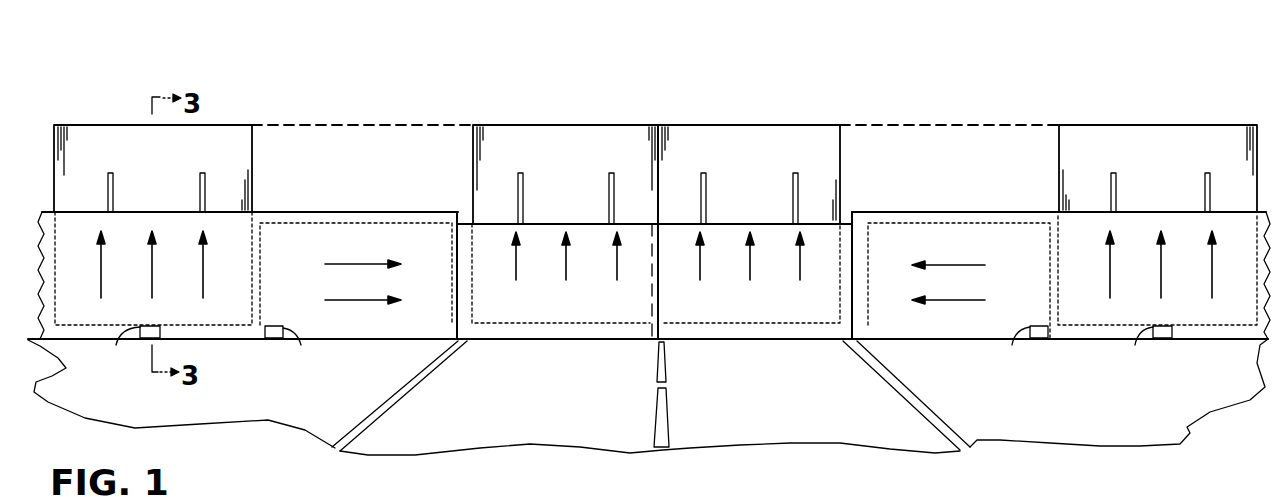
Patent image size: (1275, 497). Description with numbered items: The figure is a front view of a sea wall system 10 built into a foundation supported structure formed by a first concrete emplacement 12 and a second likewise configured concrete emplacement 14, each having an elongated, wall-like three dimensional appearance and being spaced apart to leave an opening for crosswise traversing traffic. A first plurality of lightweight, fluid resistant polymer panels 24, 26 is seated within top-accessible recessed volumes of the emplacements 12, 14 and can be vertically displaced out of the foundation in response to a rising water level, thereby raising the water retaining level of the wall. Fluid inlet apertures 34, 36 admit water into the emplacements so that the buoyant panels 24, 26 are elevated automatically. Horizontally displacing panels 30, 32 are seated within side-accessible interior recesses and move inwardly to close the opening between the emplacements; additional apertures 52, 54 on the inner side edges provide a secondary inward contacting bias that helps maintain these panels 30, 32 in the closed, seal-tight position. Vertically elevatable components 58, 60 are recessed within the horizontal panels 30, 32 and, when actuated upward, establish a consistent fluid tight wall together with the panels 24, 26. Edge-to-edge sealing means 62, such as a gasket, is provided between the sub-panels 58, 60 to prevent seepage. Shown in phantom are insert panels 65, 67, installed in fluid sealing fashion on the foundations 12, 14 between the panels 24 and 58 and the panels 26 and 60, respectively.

The sea wall system 10 is at (460, 88).
The first concrete emplacement 12 is at (78, 244).
The second concrete emplacement 14 is at (1040, 230).
The vertically displaceable panel 24 is at (117, 148).
The vertically displaceable panel 26 is at (1147, 145).
The horizontally displacing panel 30 is at (612, 340).
The horizontally displacing panel 32 is at (718, 305).
The fluid inlet aperture 34 is at (116, 345).
The fluid inlet aperture 36 is at (1135, 345).
The aperture 52 is at (301, 345).
The aperture 54 is at (1012, 345).
The vertically elevatable component 58 is at (563, 156).
The vertically elevatable component 60 is at (753, 150).
The edge-to-edge sealing means 62 is at (658, 193).
The insert panel 65 is at (366, 152).
The insert panel 67 is at (910, 152).